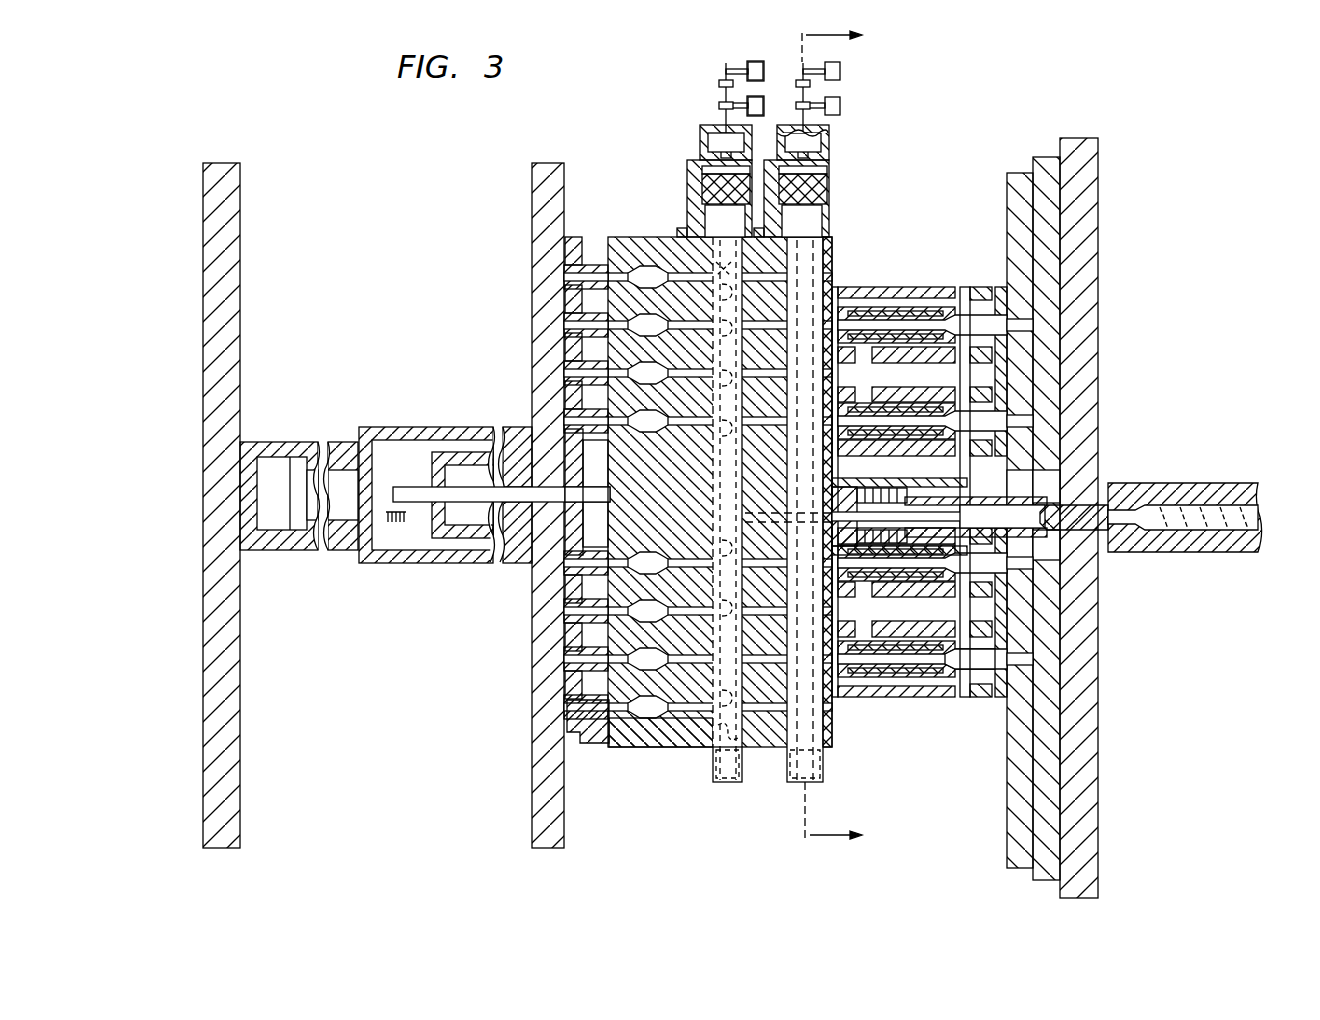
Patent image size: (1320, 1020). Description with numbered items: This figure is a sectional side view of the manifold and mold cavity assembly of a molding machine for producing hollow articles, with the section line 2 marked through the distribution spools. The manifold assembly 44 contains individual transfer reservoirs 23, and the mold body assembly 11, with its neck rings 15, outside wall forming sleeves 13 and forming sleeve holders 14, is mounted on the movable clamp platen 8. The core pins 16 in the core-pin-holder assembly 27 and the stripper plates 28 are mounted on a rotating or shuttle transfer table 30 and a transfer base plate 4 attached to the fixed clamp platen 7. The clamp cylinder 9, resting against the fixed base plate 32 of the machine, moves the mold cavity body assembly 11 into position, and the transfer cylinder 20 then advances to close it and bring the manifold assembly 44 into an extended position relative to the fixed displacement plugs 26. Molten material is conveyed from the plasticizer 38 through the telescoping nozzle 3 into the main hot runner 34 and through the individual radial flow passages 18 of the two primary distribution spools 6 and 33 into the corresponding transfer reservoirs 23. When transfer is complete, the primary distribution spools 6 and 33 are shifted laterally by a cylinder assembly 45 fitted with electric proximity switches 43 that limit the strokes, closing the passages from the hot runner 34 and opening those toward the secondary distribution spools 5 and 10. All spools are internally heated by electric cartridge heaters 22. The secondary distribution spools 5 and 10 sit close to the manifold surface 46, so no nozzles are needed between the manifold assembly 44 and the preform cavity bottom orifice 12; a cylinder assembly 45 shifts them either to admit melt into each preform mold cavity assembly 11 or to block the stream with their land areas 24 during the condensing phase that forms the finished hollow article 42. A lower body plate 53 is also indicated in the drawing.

The section line 2- 2 is at (841, 438).
The telescoping nozzle 3 is at (1003, 500).
The transfer base plate 4 is at (1048, 168).
The secondary distribution spool 5 is at (796, 785).
The primary distribution spool 6 is at (712, 770).
The fixed clamp platen 7 is at (1095, 180).
The movable clamp platen 8 is at (564, 175).
The clamp cylinder 9 is at (298, 470).
The secondary distribution spool 10 is at (820, 775).
The mold body assembly 11 is at (936, 745).
The preform cavity bottom orifice 12 is at (887, 305).
The outside wall forming sleeve 13 is at (880, 745).
The forming sleeve holder 14 is at (838, 292).
The neck ring 15 is at (960, 292).
The core pin 16 is at (960, 750).
The radial flow passage 18 is at (735, 270).
The transfer cylinder 20 is at (468, 470).
The electric cartridge heater 22 is at (728, 780).
The transfer reservoir 23 is at (628, 262).
The land area 24 is at (847, 745).
The displacement plug 26 is at (598, 262).
The core-pin-holder assembly 27 is at (986, 750).
The stripper plate 28 is at (978, 290).
The transfer table 30 is at (1020, 195).
The fixed base plate 32 is at (232, 167).
The primary distribution spool 33 is at (742, 755).
The main hot runner 34 is at (725, 738).
The plasticizer 38 is at (1175, 535).
The finished hollow article 42 is at (948, 300).
The electric proximity switch 43 is at (754, 66).
The manifold assembly 44 is at (608, 745).
The cylinder assembly 45 is at (700, 140).
The manifold surface 46 is at (832, 262).
The plate 53 is at (641, 747).